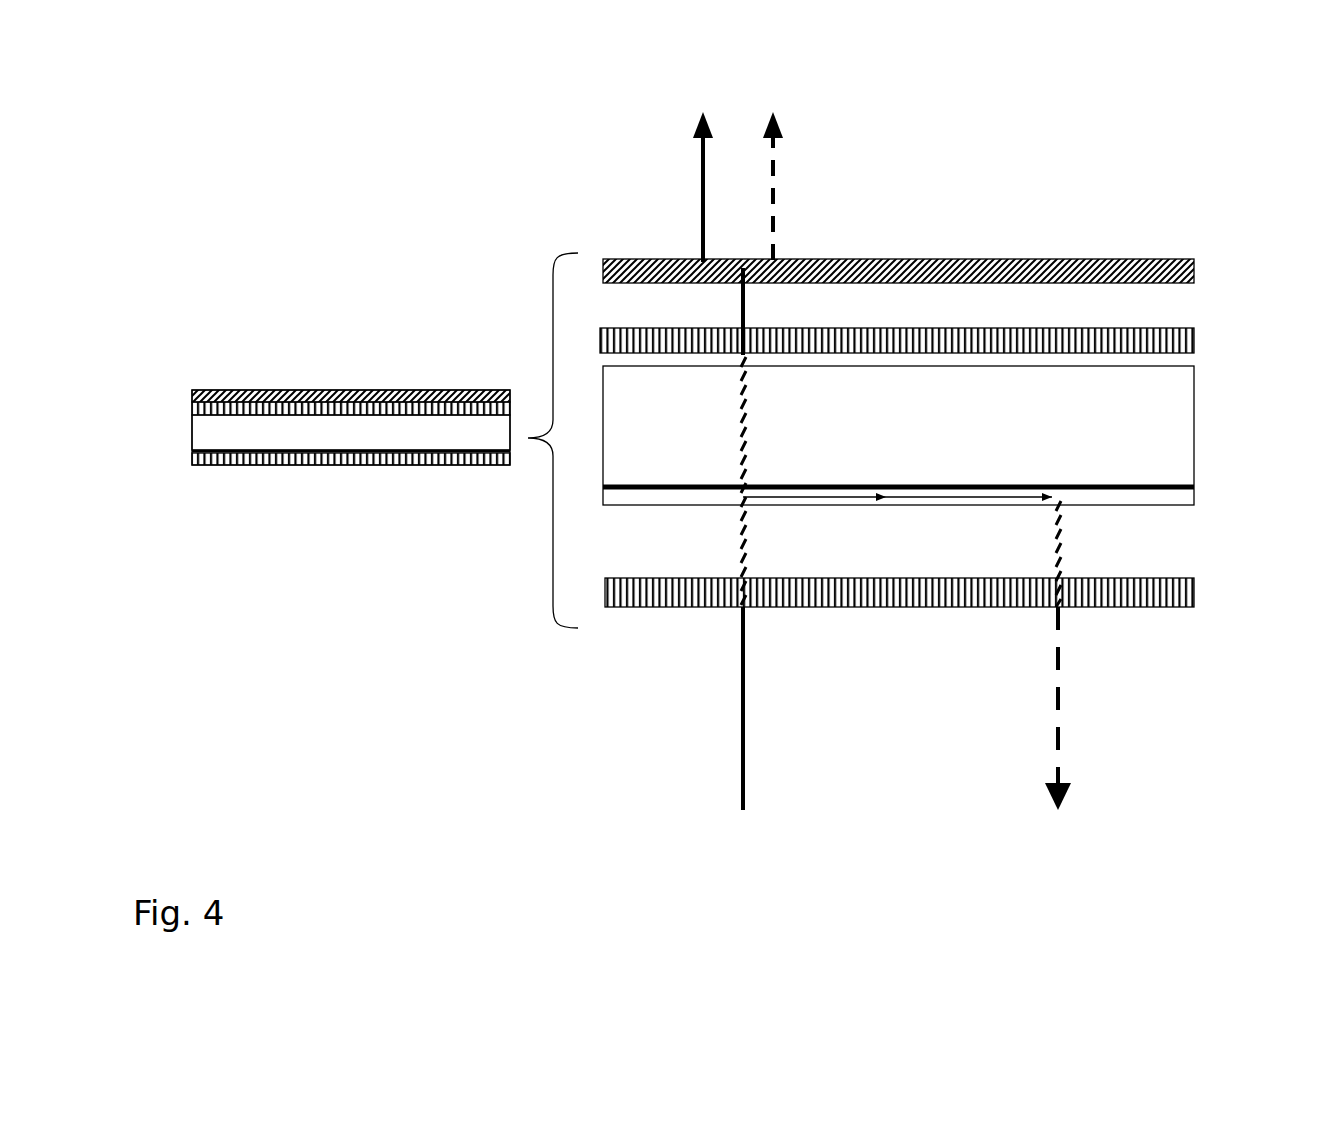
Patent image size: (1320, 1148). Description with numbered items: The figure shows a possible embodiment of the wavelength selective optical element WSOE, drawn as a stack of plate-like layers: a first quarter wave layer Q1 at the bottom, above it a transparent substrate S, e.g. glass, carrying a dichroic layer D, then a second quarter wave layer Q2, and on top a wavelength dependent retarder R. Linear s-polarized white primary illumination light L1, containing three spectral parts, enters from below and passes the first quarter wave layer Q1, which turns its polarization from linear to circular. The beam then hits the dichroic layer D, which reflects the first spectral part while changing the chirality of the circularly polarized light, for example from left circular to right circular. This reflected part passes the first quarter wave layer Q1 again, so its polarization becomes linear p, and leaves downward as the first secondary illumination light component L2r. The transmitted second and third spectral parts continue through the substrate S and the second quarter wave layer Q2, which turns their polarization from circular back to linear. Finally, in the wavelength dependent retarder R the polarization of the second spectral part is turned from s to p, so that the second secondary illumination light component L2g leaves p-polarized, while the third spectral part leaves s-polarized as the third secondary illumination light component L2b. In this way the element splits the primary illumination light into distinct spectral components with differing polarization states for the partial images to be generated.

The wavelength selective optical element WSOE is at (282, 358).
The wavelength dependent retarder R is at (1182, 268).
The second quarter wave layer Q2 is at (1178, 333).
The transparent substrate S is at (1170, 398).
The dichroic layer D is at (1167, 484).
The first quarter wave layer Q1 is at (1177, 585).
The primary illumination light L1 is at (633, 539).
The third secondary illumination light component L2b is at (625, 187).
The second secondary illumination light component L2g is at (848, 186).
The first secondary illumination light component L2r is at (984, 651).